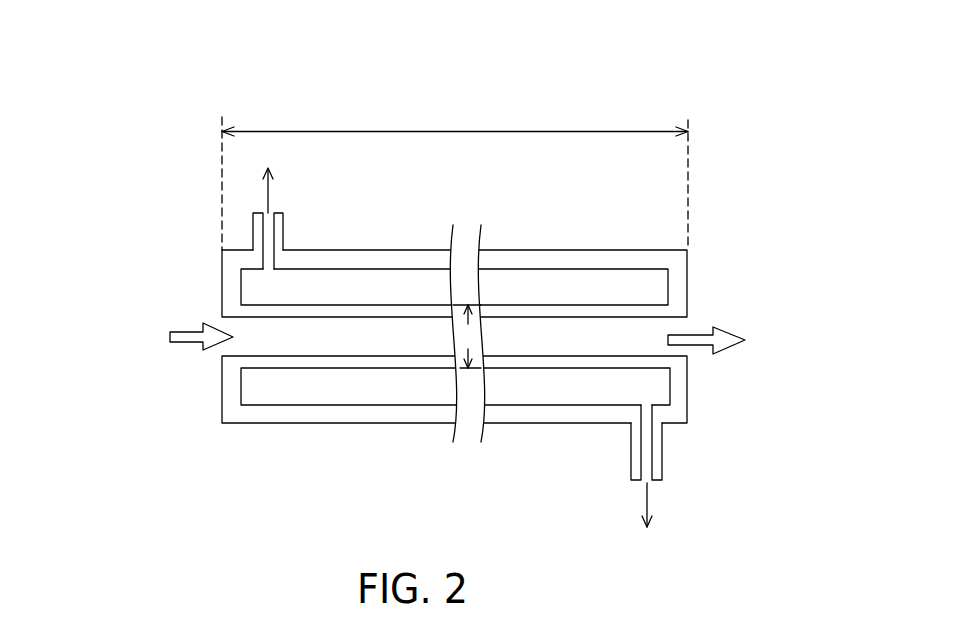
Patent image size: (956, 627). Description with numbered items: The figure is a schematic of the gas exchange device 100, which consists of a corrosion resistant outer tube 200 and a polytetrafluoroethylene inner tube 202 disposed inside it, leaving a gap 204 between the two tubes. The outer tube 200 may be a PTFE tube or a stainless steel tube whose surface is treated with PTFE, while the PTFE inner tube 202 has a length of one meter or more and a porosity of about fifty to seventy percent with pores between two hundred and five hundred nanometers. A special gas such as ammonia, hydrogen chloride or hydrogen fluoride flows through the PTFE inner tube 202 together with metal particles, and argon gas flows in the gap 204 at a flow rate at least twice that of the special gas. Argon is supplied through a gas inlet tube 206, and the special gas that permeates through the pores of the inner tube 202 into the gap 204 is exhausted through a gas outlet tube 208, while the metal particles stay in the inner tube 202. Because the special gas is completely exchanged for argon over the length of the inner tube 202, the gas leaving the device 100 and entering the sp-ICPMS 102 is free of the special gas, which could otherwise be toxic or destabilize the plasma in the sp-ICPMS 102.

The gas exchange device 100 is at (420, 302).
The sp-ICPMS 102 is at (713, 340).
The corrosion resistant outer tube 200 is at (562, 250).
The PTFE inner tube 202 is at (324, 362).
The gap 204 is at (361, 305).
The gas inlet tube 206 is at (662, 457).
The gas outlet tube 208 is at (285, 225).